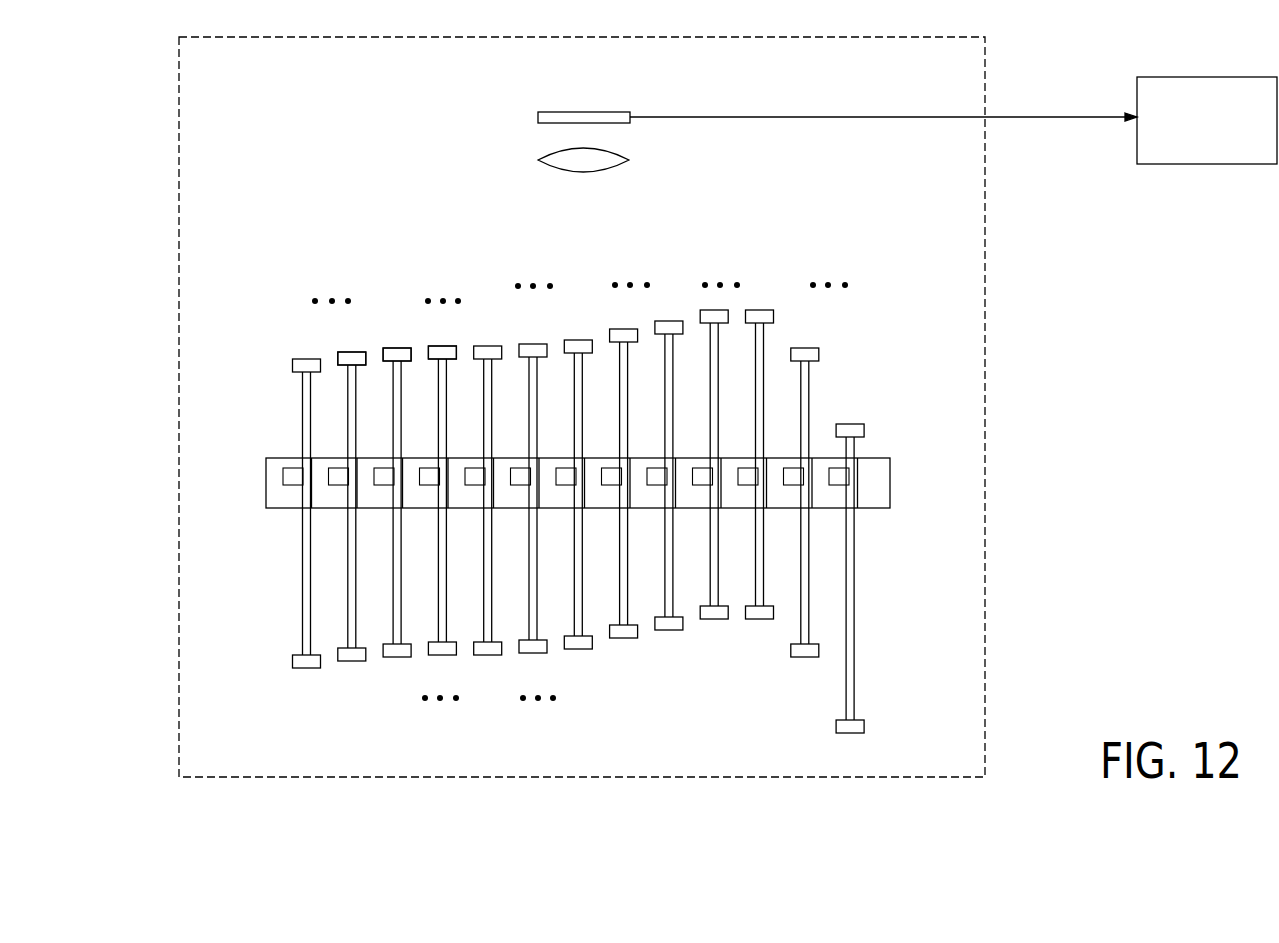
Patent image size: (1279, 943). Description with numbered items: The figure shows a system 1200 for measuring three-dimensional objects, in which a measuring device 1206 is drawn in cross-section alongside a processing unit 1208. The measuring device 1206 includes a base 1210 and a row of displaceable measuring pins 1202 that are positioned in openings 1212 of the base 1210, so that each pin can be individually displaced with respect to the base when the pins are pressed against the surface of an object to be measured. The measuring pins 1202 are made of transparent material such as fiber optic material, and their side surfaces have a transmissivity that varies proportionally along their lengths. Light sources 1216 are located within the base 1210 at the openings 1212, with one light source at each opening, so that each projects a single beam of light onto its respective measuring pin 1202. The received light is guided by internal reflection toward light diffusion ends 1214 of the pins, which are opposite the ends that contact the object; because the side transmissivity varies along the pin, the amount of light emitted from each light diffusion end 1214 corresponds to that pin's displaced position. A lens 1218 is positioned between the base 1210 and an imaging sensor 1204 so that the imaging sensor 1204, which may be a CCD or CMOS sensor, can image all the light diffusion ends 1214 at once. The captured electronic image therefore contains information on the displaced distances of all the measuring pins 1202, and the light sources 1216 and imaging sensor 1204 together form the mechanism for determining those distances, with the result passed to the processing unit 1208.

The system for measuring three-dimensional objects 1200 is at (1182, 689).
The displaceable measuring pins 1202 is at (545, 377).
The imaging sensor 1204 is at (538, 118).
The measuring device 1206 is at (985, 368).
The processing unit 1208 is at (1207, 164).
The base 1210 is at (875, 508).
The openings 1212 is at (812, 457).
The light diffusion ends 1214 is at (443, 346).
The light sources 1216 is at (562, 487).
The lens 1218 is at (556, 169).